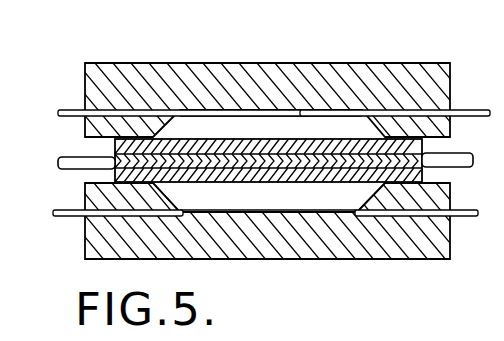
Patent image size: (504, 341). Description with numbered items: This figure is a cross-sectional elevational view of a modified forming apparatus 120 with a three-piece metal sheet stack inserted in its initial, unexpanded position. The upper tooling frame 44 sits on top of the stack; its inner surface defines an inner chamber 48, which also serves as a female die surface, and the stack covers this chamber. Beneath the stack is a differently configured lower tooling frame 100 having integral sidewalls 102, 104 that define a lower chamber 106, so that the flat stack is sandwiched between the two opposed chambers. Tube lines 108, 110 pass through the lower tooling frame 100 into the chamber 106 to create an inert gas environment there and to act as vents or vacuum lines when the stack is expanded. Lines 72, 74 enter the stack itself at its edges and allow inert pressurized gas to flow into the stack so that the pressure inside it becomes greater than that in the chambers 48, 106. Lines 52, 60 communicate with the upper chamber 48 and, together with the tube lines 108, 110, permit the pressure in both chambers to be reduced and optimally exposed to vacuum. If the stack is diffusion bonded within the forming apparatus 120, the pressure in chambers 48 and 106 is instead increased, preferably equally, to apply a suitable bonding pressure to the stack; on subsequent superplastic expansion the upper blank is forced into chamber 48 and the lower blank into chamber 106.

The forming apparatus 120 is at (258, 51).
The upper tooling frame 44 is at (443, 76).
The inner chamber 48 is at (271, 125).
The vent line 52 is at (72, 110).
The vent line 60 is at (496, 100).
The gas inlet line 72 is at (72, 157).
The gas inlet line 74 is at (497, 161).
The lower tooling frame 100 is at (274, 248).
The sidewall 102 is at (85, 199).
The sidewall 104 is at (449, 190).
The chamber 106 is at (268, 197).
The tube line 108 is at (496, 220).
The tube line 110 is at (73, 223).